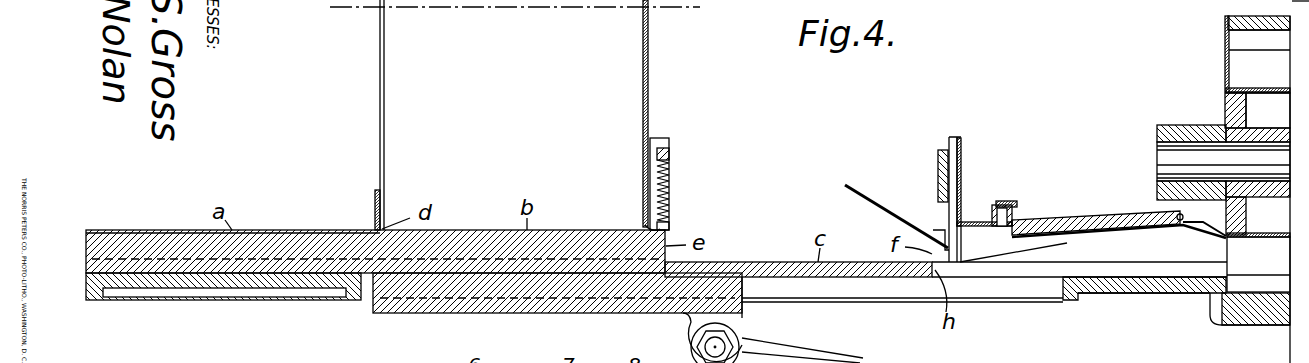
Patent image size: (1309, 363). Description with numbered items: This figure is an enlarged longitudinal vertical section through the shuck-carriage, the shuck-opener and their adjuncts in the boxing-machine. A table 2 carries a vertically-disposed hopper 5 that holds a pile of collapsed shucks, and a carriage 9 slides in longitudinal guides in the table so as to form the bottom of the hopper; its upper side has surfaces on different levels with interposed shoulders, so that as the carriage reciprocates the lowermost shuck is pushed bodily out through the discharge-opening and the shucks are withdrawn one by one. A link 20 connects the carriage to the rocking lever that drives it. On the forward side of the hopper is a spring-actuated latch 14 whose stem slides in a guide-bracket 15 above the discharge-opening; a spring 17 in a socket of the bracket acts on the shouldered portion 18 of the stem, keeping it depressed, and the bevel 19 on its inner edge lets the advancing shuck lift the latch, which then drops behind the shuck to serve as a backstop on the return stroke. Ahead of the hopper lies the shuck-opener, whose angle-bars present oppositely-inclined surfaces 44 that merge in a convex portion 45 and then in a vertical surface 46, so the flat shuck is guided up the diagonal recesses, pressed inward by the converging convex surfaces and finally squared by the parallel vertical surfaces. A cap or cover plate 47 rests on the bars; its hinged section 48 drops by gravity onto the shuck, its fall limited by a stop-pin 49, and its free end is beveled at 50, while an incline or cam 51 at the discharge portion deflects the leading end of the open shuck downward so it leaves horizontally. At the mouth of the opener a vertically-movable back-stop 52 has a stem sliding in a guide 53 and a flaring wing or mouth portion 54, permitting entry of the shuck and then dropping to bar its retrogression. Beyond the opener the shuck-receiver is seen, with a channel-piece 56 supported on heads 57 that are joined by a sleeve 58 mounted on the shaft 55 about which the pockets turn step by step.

The table 2 is at (242, 289).
The hopper 5 is at (380, 77).
The carriage 9 is at (327, 233).
The spring-actuated latch 14 is at (644, 184).
The guide-bracket 15 is at (672, 156).
The spring 17 is at (670, 191).
The shouldered portion 18 is at (670, 223).
The beveled edge 19 is at (648, 228).
The link 20 is at (816, 352).
The inclined surfaces 44 is at (977, 240).
The convex portion 45 is at (1117, 236).
The vertical surface 46 is at (1203, 250).
The cap or cover plate 47 is at (996, 220).
The hinged section 48 is at (1061, 218).
The stop-pin 49 is at (1006, 203).
The bevel 50 is at (1010, 230).
The incline or cam 51 is at (1210, 232).
The back-stop 52 is at (948, 215).
The guide 53 is at (936, 166).
The wing or mouth portion 54 is at (866, 190).
The shaft 55 is at (1157, 160).
The channel-piece 56 is at (1243, 65).
The heads 57 is at (1235, 108).
The sleeve 58 is at (1268, 133).